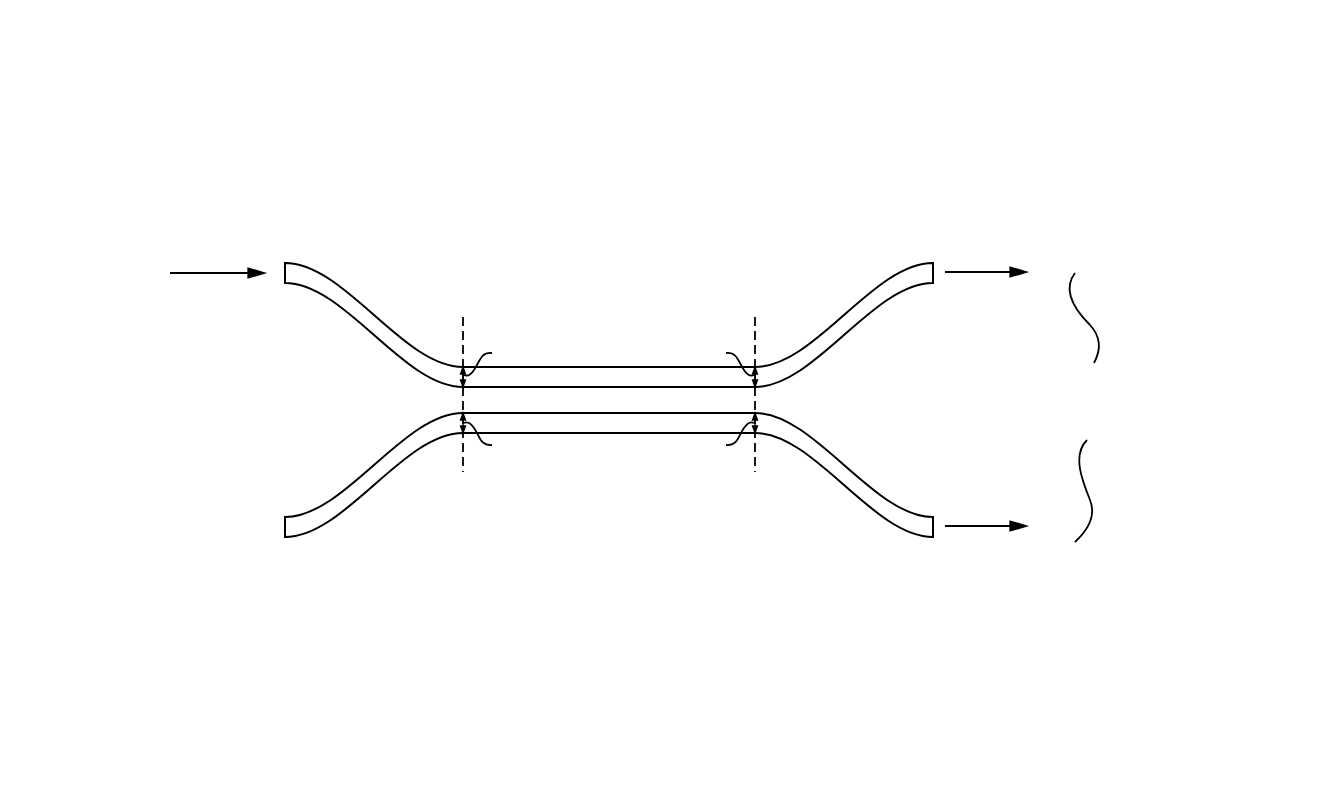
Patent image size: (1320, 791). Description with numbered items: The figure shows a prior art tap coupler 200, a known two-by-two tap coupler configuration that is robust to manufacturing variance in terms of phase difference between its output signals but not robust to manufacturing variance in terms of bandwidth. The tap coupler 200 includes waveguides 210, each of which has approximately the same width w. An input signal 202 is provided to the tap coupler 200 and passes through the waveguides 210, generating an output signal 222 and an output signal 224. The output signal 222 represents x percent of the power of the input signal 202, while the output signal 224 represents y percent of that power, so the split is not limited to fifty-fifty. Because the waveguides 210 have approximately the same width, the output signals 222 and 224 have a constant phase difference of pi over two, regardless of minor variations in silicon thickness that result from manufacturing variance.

The tap coupler 200 is at (240, 100).
The input signal 202 is at (217, 236).
The waveguides 210 is at (755, 490).
The output signal 222 is at (715, 310).
The output signal 224 is at (714, 494).